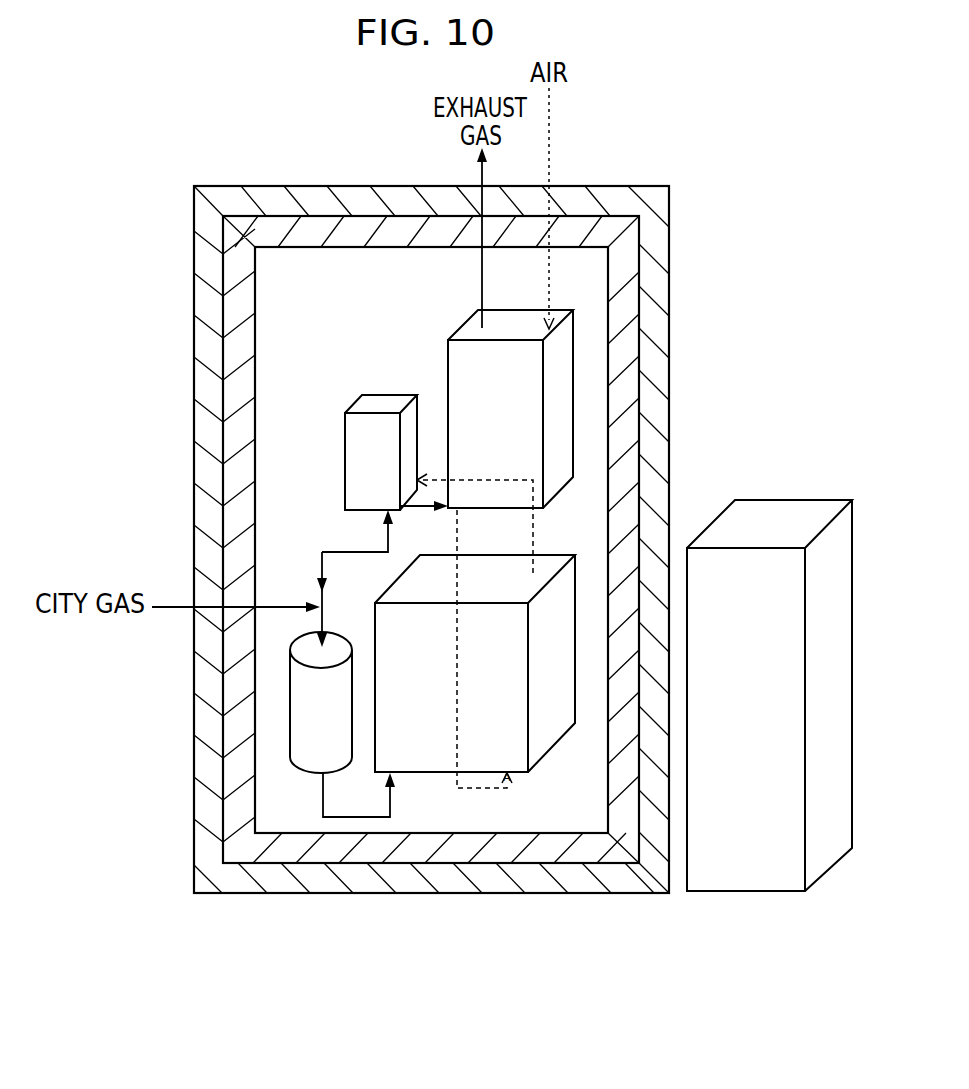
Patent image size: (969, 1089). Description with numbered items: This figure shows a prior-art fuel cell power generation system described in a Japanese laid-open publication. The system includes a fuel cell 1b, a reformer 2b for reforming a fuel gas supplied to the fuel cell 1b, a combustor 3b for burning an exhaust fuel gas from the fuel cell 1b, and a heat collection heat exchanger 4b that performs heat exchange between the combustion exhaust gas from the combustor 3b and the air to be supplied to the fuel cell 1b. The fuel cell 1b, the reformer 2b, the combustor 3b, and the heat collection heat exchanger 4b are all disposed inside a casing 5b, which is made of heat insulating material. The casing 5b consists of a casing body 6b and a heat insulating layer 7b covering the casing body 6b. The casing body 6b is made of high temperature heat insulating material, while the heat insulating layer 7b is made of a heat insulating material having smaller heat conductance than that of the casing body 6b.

The fuel cell 1b is at (435, 767).
The reformer 2b is at (311, 758).
The combustor 3b is at (382, 402).
The heat collection heat exchanger 4b is at (577, 348).
The casing 5b is at (191, 251).
The casing body 6b is at (580, 855).
The heat insulating layer 7b is at (307, 197).